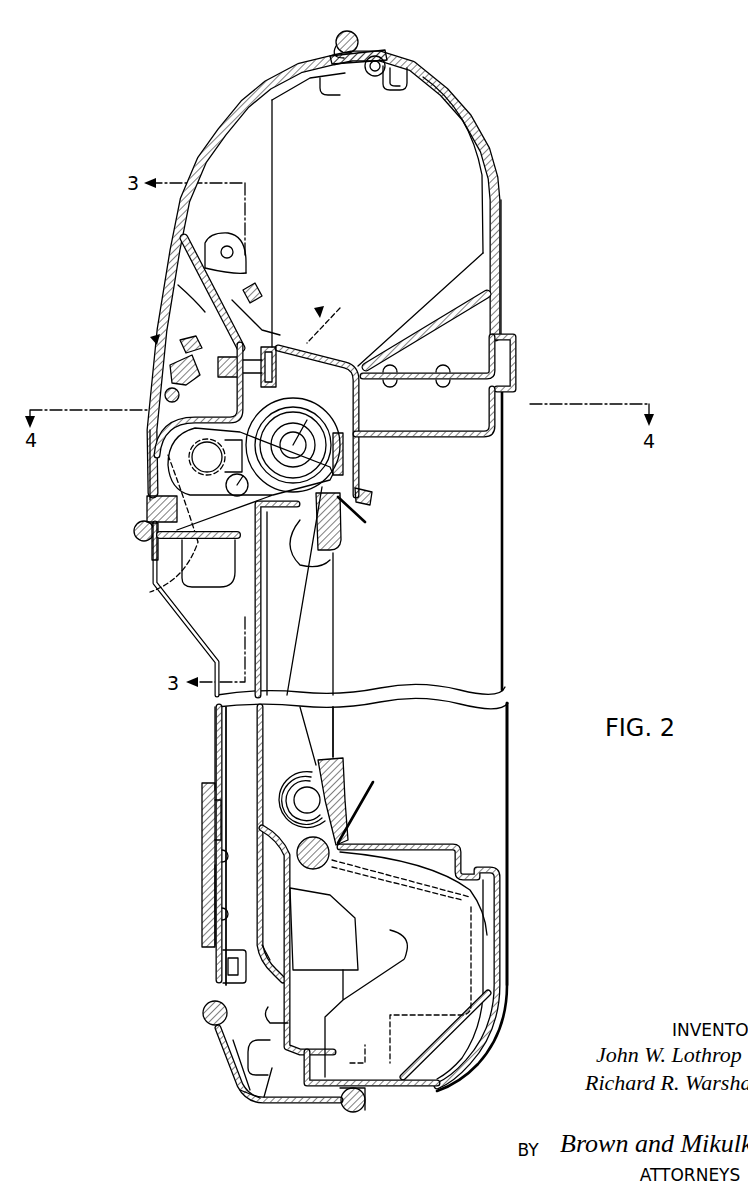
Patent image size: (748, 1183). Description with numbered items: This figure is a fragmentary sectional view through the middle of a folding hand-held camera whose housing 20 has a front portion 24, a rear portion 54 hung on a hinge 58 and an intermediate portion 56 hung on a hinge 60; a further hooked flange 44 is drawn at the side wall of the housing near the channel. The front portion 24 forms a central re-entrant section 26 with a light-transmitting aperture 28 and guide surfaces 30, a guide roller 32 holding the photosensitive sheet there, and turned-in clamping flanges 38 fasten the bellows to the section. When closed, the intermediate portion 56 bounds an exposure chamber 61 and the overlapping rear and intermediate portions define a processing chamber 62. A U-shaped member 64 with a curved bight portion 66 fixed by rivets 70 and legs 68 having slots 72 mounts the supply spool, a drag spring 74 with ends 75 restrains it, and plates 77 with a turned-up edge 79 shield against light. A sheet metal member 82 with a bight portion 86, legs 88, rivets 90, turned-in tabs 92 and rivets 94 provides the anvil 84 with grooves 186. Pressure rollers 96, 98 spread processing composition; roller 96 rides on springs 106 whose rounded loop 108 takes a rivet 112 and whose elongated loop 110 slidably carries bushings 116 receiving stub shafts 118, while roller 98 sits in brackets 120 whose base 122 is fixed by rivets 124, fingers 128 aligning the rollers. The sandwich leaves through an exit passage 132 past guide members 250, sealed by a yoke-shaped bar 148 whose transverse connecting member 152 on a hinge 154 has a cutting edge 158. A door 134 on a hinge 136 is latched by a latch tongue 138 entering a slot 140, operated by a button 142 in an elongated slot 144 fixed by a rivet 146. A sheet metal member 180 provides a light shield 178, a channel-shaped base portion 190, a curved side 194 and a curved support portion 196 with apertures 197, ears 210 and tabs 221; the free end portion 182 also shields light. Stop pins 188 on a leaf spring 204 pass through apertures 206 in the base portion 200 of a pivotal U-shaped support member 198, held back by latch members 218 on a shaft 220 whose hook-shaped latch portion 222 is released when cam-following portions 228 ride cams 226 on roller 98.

The housing 20 is at (200, 731).
The front portion 24 is at (514, 298).
The central re-entrant section 26 is at (420, 387).
The light-transmitting aperture 28 is at (336, 721).
The guide surfaces 30 is at (285, 672).
The guide roller 32 is at (320, 876).
The turned-in clamping flanges 38 is at (355, 535).
The hook flange 44 is at (517, 368).
The rear portion 54 is at (229, 113).
The intermediate portion 56 is at (256, 771).
The hinge 58 is at (341, 32).
The hinge 60 is at (352, 1114).
The exposure chamber 61 is at (280, 618).
The processing chamber 62 is at (236, 781).
The U-shaped member 64 is at (480, 1062).
The curved bight portion 66 is at (509, 1000).
The legs 68 is at (368, 1027).
The rivets 70 is at (507, 946).
The slot 72 is at (406, 963).
The drag spring 74 is at (300, 983).
The ends 75 is at (306, 948).
The plates 77 is at (500, 1042).
The turned-up edge 79 is at (385, 870).
The sheet metal member 82 is at (490, 296).
The anvil 84 is at (318, 358).
The bight portion 86 is at (368, 338).
The legs 88 is at (433, 112).
The rivets 90 is at (430, 353).
The turned-in tabs 92 is at (413, 66).
The rivets 94 is at (384, 56).
The pressure roller 96 is at (370, 463).
The pressure roller 98 is at (150, 590).
The springs 106 is at (340, 560).
The rounded loop 108 is at (300, 768).
The elongated loop 110 is at (362, 445).
The rivet 112 is at (302, 806).
The bushings 116 is at (358, 422).
The stub shafts 118 is at (350, 399).
The brackets 120 is at (300, 600).
The base 122 is at (152, 570).
The rivets 124 is at (160, 514).
The fingers 128 is at (364, 478).
The exit passage 132 is at (235, 1048).
The door 134 is at (213, 713).
The hinge 136 is at (138, 538).
The latch tongue 138 is at (216, 913).
The slot 140 is at (216, 938).
The button 142 is at (207, 874).
The elongated slot 144 is at (212, 817).
The rivet 146 is at (221, 856).
The yoke-shaped bar 148 is at (222, 1092).
The transverse connecting member 152 is at (212, 1047).
The hinge 154 is at (203, 1016).
The edge 158 is at (340, 1122).
The light shield 178 is at (198, 592).
The sheet metal member 180 is at (262, 290).
The free end portion 182 is at (335, 585).
The grooves 186 is at (330, 318).
The stop pins 188 is at (266, 348).
The channel-shaped base portion 190 is at (165, 492).
The side 194 is at (298, 400).
The curved support portion 196 is at (274, 260).
The apertures 197 is at (272, 327).
The U-shaped support member 198 is at (180, 272).
The base portion 200 is at (165, 358).
The leaf spring 204 is at (176, 292).
The apertures 206 is at (320, 314).
The ears 210 is at (220, 242).
The latch members 218 is at (110, 432).
The shaft 220 is at (164, 393).
The tabs 221 is at (162, 420).
The hook-shaped latch portion 222 is at (176, 322).
The cams 226 is at (172, 444).
The cam-following portions 228 is at (172, 470).
The guide members 250 is at (277, 1103).